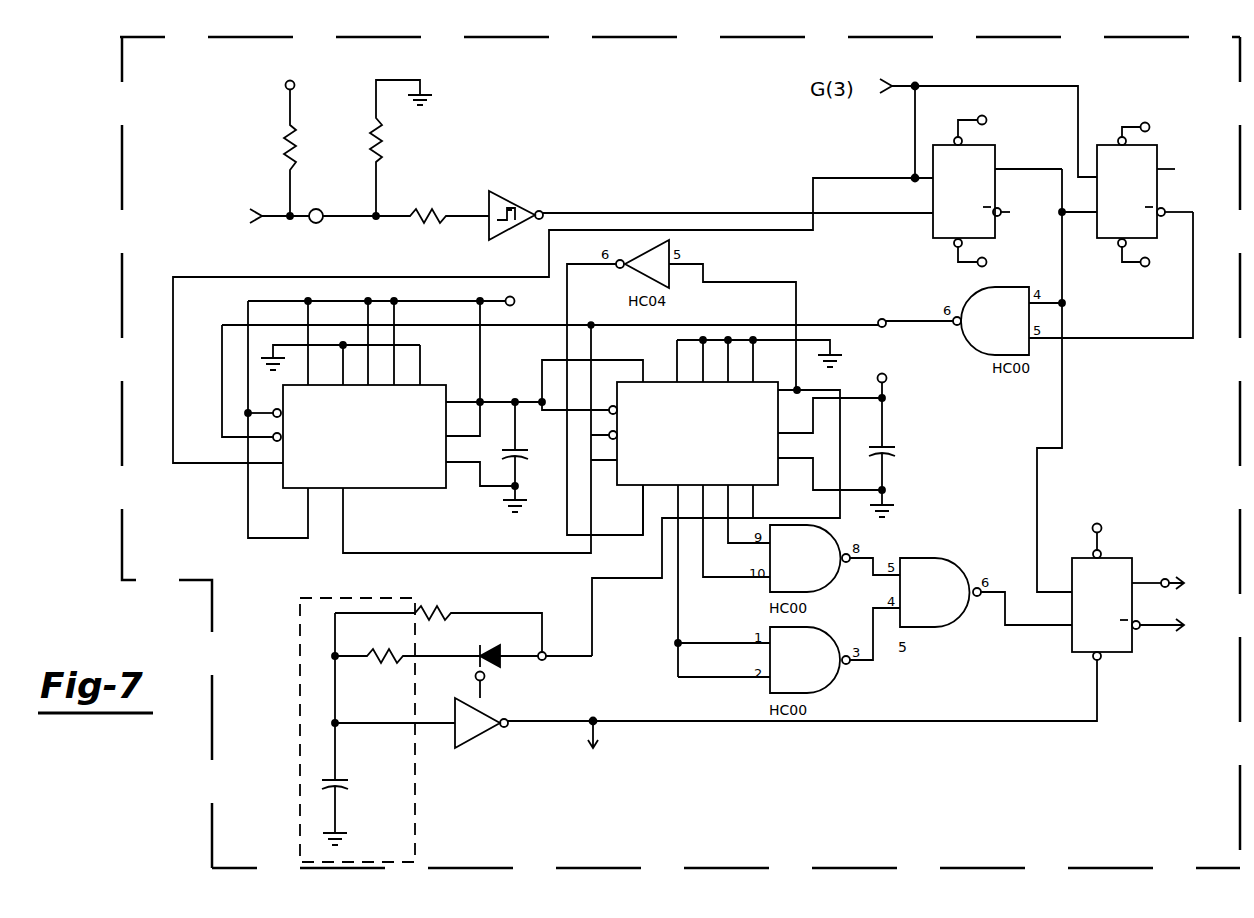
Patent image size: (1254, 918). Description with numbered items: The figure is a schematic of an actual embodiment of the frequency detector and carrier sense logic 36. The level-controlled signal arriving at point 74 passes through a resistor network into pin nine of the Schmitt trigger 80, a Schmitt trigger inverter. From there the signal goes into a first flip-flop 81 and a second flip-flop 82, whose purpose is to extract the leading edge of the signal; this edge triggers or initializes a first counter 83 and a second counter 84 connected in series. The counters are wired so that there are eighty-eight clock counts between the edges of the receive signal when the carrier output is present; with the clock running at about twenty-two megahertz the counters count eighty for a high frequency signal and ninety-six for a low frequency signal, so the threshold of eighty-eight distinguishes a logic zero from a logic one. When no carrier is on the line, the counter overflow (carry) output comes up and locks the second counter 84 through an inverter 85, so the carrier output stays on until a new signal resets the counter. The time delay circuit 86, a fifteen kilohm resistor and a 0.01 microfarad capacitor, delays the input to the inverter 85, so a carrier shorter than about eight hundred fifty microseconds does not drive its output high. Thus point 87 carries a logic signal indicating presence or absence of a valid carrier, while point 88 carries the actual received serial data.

The frequency detector and carrier sense logic 36 is at (622, 38).
The point 74 is at (285, 221).
The Schmitt trigger 80 is at (523, 198).
The first flip-flop 81 is at (995, 151).
The second flip-flop 82 is at (1157, 151).
The first counter 83 is at (327, 478).
The second counter 84 is at (712, 452).
The inverter 85 is at (492, 732).
The time delay circuit 86 is at (300, 640).
The point 87 is at (597, 716).
The point 88 is at (1166, 578).